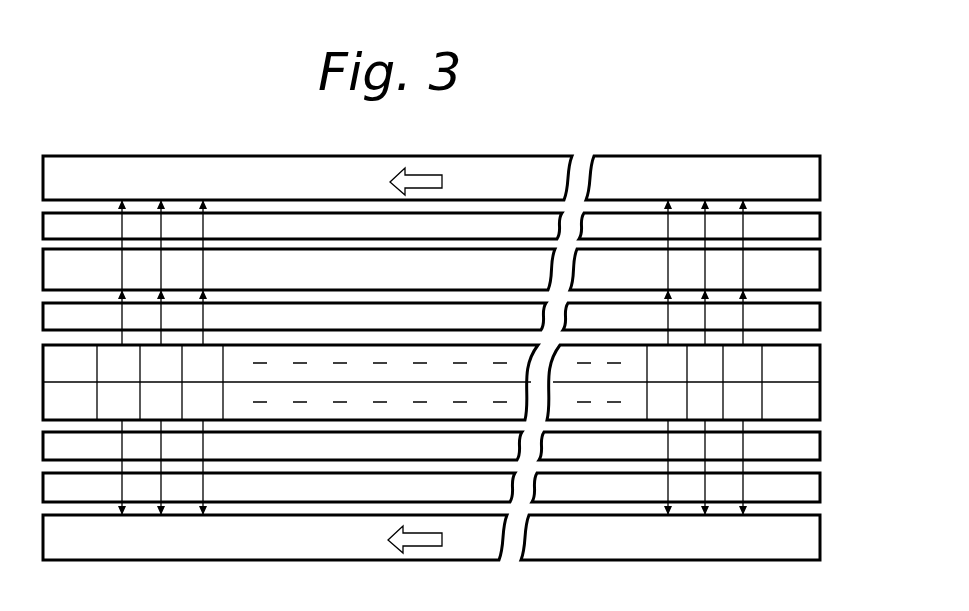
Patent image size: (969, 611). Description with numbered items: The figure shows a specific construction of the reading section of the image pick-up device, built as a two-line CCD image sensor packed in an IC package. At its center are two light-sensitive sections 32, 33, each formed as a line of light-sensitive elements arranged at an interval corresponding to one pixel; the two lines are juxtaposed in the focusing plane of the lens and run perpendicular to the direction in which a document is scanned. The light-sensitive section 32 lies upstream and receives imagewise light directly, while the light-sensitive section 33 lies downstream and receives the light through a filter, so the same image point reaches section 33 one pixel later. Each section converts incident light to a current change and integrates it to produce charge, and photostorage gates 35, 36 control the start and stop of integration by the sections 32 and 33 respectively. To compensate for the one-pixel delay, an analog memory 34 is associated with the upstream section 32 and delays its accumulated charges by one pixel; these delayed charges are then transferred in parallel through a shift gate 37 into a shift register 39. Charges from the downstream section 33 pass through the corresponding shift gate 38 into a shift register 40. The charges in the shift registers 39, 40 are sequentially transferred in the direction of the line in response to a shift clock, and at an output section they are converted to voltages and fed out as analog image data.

The light-sensitive section 32 is at (820, 358).
The light-sensitive section 33 is at (820, 401).
The analog memory 34 is at (820, 270).
The photostorage gate 35 is at (820, 318).
The photostorage gate 36 is at (820, 441).
The shift gate 37 is at (820, 231).
The shift gate 38 is at (820, 480).
The shift register 39 is at (820, 184).
The shift register 40 is at (820, 540).